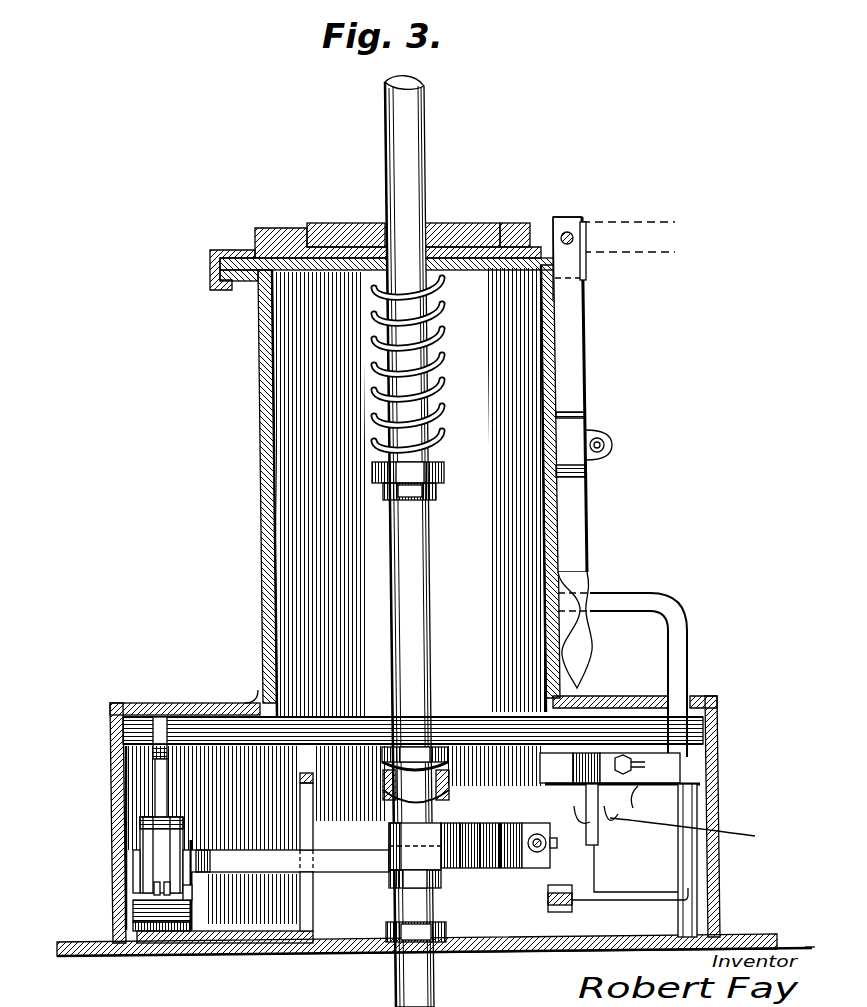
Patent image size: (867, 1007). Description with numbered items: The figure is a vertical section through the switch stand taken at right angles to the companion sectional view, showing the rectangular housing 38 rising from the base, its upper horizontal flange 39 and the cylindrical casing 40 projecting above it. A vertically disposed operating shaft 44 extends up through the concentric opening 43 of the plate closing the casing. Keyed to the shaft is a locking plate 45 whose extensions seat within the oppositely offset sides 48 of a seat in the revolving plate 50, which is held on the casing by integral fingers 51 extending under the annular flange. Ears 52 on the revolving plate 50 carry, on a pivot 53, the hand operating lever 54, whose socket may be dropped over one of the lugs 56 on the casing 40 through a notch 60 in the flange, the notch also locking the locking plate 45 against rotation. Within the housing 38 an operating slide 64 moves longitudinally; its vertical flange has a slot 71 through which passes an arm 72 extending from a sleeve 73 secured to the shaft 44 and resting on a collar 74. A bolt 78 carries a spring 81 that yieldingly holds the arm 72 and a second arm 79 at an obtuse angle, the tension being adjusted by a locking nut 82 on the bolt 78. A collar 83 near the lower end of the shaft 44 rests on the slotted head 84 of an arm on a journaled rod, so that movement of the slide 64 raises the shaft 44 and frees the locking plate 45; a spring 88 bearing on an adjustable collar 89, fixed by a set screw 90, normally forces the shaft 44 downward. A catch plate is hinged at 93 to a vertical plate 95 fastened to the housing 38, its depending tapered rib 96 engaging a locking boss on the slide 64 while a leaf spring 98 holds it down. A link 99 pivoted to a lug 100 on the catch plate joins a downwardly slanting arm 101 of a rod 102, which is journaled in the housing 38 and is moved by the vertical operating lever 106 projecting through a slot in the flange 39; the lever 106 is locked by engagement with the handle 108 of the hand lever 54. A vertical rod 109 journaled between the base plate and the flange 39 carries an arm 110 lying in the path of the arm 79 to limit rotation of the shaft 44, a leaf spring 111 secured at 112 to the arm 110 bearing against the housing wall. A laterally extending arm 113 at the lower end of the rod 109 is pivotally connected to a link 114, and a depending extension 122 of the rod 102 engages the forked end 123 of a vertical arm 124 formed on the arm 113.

The rectangular housing 38 is at (110, 767).
The horizontal flange 39 is at (171, 703).
The cylindrical casing 40 is at (266, 375).
The concentric opening 43 is at (465, 270).
The operating shaft 44 is at (422, 176).
The locking plate 45 is at (440, 228).
The oppositely offset sides 48 is at (305, 240).
The revolving plate 50 is at (510, 235).
The integral fingers 51 is at (216, 270).
The ears 52 is at (578, 226).
The pivot 53 is at (574, 238).
The hand operating lever 54 is at (586, 373).
The lugs 56 is at (613, 444).
The notch 60 is at (588, 277).
The operating slide 64 is at (302, 932).
The slot 71 is at (313, 820).
The arm 72 is at (290, 861).
The sleeve 73 is at (389, 870).
The collar 74 is at (447, 884).
The bolt 78 is at (555, 848).
The arm 79 is at (546, 823).
The spring 81 is at (505, 868).
The locking nut 82 is at (537, 853).
The collar 83 is at (449, 761).
The slotted head 84 is at (450, 789).
The spring 88 is at (441, 333).
The collar 89 is at (445, 470).
The set screw 90 is at (436, 502).
The hinge 93 is at (193, 894).
The vertical plate 95 is at (136, 866).
The tapered rib 96 is at (135, 916).
The leaf spring 98 is at (141, 832).
The link 99 is at (158, 805).
The lug 100 is at (148, 892).
The downwardly slanting arm 101 is at (118, 735).
The rod 102 is at (458, 730).
The operating lever 106 is at (688, 672).
The handle 108 is at (586, 650).
The vertical rod 109 is at (698, 815).
The arm 110 is at (540, 760).
The leaf spring 111 is at (665, 770).
The bolt fastening 112 is at (645, 805).
The laterally extending arm 113 is at (617, 902).
The link 114 is at (548, 900).
The depending extension 122 is at (701, 833).
The forked end 123 is at (612, 822).
The vertical arm 124 is at (598, 860).